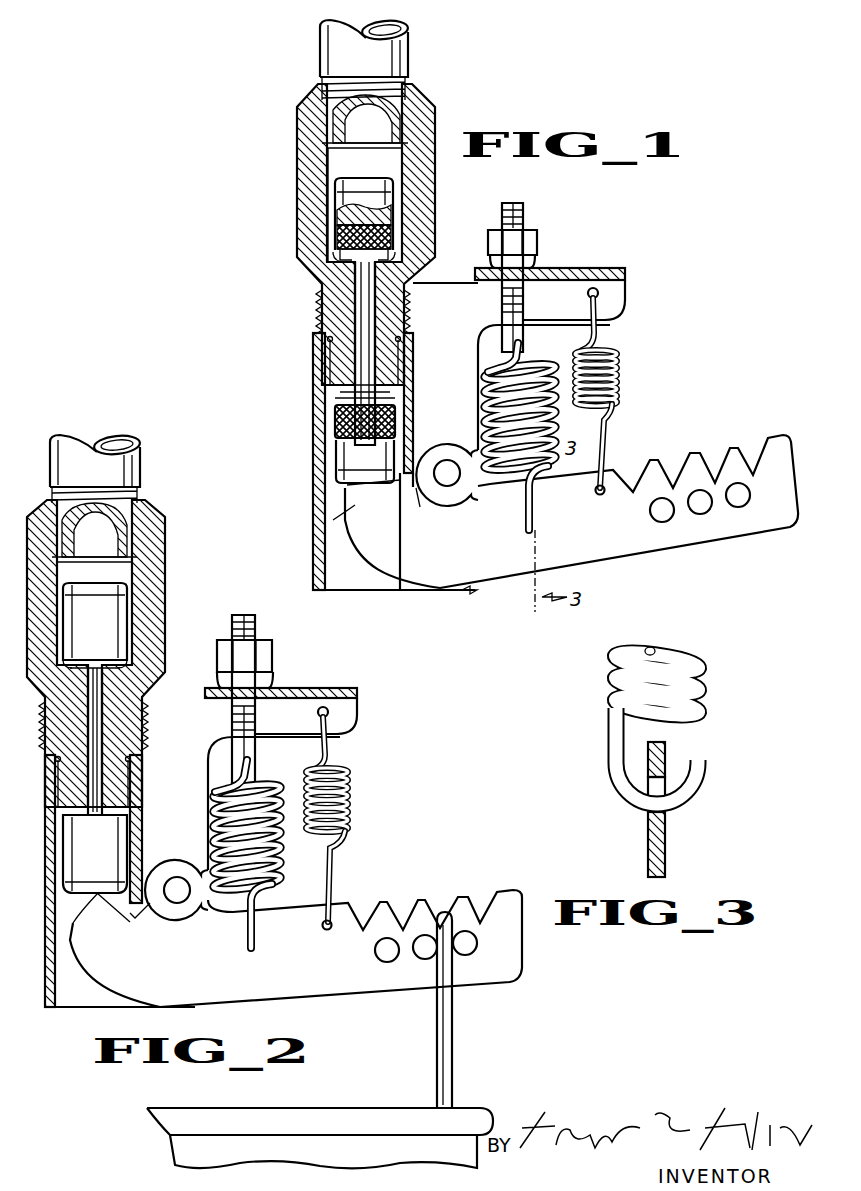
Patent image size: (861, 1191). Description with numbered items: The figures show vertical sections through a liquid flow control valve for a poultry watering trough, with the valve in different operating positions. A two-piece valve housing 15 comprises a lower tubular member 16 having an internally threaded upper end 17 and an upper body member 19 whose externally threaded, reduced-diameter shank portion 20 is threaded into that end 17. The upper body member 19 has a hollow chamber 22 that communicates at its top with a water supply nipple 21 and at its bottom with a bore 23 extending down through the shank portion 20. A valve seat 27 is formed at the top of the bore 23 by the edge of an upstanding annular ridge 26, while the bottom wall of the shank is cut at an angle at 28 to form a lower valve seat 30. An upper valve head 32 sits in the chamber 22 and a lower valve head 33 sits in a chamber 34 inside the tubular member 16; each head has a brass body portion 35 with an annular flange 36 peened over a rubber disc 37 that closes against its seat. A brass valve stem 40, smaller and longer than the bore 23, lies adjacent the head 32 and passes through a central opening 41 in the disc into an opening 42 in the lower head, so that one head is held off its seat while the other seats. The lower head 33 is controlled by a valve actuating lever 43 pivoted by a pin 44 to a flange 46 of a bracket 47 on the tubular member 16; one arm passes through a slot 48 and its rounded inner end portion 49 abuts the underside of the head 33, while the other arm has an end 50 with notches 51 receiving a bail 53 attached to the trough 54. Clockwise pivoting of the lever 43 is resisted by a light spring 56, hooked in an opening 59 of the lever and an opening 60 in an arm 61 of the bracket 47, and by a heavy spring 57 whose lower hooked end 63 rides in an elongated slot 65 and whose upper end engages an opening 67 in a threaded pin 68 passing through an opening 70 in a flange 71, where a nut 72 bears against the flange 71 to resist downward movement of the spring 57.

In FIG. 1, the valve housing 15 is at (282, 292).
In FIG. 2, the valve housing 15 is at (215, 590).
In FIG. 1, the lower tubular member 16 is at (322, 505).
In FIG. 2, the lower tubular member 16 is at (40, 1012).
In FIG. 1, the internally threaded upper end 17 is at (320, 312).
In FIG. 2, the internally threaded upper end 17 is at (130, 733).
In FIG. 1, the upper body member 19 is at (421, 172).
In FIG. 2, the upper body member 19 is at (155, 528).
In FIG. 1, the shank portion 20 is at (396, 307).
In FIG. 2, the shank portion 20 is at (120, 715).
In FIG. 1, the water supply nipple 21 is at (402, 47).
In FIG. 2, the water supply nipple 21 is at (130, 468).
In FIG. 1, the chamber 22 is at (333, 160).
In FIG. 2, the chamber 22 is at (125, 575).
In FIG. 1, the bore 23 is at (398, 340).
In FIG. 2, the bore 23 is at (110, 780).
In FIG. 1, the annular ridge 26 is at (393, 259).
In FIG. 2, the annular ridge 26 is at (117, 675).
In FIG. 1, the valve seat 27 is at (336, 262).
In FIG. 2, the valve seat 27 is at (122, 668).
In FIG. 1, the angled cut 28 is at (330, 385).
In FIG. 2, the angled cut 28 is at (110, 805).
In FIG. 1, the lower valve seat 30 is at (400, 383).
In FIG. 2, the lower valve seat 30 is at (118, 810).
In FIG. 1, the upper valve head 32 is at (288, 203).
In FIG. 2, the upper valve head 32 is at (108, 635).
In FIG. 1, the lower valve head 33 is at (288, 460).
In FIG. 2, the lower valve head 33 is at (165, 845).
In FIG. 1, the chamber 34 is at (337, 535).
In FIG. 2, the chamber 34 is at (65, 960).
In FIG. 1, the body portion 35 is at (355, 183).
In FIG. 1, the annular flange 36 is at (343, 236).
In FIG. 1, the rubber disc 37 is at (395, 232).
In FIG. 1, the valve stem 40 is at (362, 353).
In FIG. 2, the valve stem 40 is at (93, 770).
In FIG. 1, the central opening 41 is at (357, 392).
In FIG. 1, the opening 42 is at (398, 460).
In FIG. 1, the valve actuating lever 43 is at (618, 580).
In FIG. 2, the valve actuating lever 43 is at (353, 1010).
In FIG. 3, the valve actuating lever 43 is at (605, 845).
In FIG. 1, the pin 44 is at (450, 478).
In FIG. 2, the pin 44 is at (180, 893).
In FIG. 1, the flange 46 is at (458, 361).
In FIG. 2, the flange 46 is at (192, 835).
In FIG. 1, the bracket 47 is at (617, 293).
In FIG. 2, the bracket 47 is at (350, 710).
In FIG. 1, the slot 48 is at (400, 483).
In FIG. 2, the slot 48 is at (137, 898).
In FIG. 1, the inner end portion 49 is at (340, 518).
In FIG. 2, the inner end portion 49 is at (73, 921).
In FIG. 1, the end 50 is at (730, 520).
In FIG. 2, the end 50 is at (500, 960).
In FIG. 3, the end 50 is at (665, 835).
In FIG. 1, the notches 51 is at (700, 452).
In FIG. 2, the notches 51 is at (445, 905).
In FIG. 2, the bail 53 is at (452, 1014).
In FIG. 2, the poultry watering trough 54 is at (302, 1126).
In FIG. 1, the spring 56 is at (617, 364).
In FIG. 2, the spring 56 is at (348, 775).
In FIG. 1, the spring 57 is at (545, 418).
In FIG. 2, the spring 57 is at (278, 853).
In FIG. 3, the spring 57 is at (625, 700).
In FIG. 1, the opening 59 is at (605, 493).
In FIG. 2, the opening 59 is at (330, 928).
In FIG. 1, the opening 60 is at (598, 297).
In FIG. 2, the opening 60 is at (328, 716).
In FIG. 1, the arm 61 is at (610, 315).
In FIG. 2, the arm 61 is at (342, 730).
In FIG. 1, the lower hooked end 63 is at (536, 497).
In FIG. 2, the lower hooked end 63 is at (258, 892).
In FIG. 3, the lower hooked end 63 is at (635, 803).
In FIG. 1, the elongated slot 65 is at (536, 533).
In FIG. 2, the elongated slot 65 is at (248, 952).
In FIG. 3, the elongated slot 65 is at (657, 786).
In FIG. 1, the opening 67 is at (523, 348).
In FIG. 2, the opening 67 is at (250, 752).
In FIG. 1, the threaded pin 68 is at (523, 208).
In FIG. 2, the threaded pin 68 is at (255, 625).
In FIG. 1, the opening 70 is at (523, 285).
In FIG. 2, the opening 70 is at (255, 700).
In FIG. 1, the flange 71 is at (585, 277).
In FIG. 2, the flange 71 is at (325, 690).
In FIG. 1, the nut 72 is at (525, 237).
In FIG. 2, the nut 72 is at (265, 655).